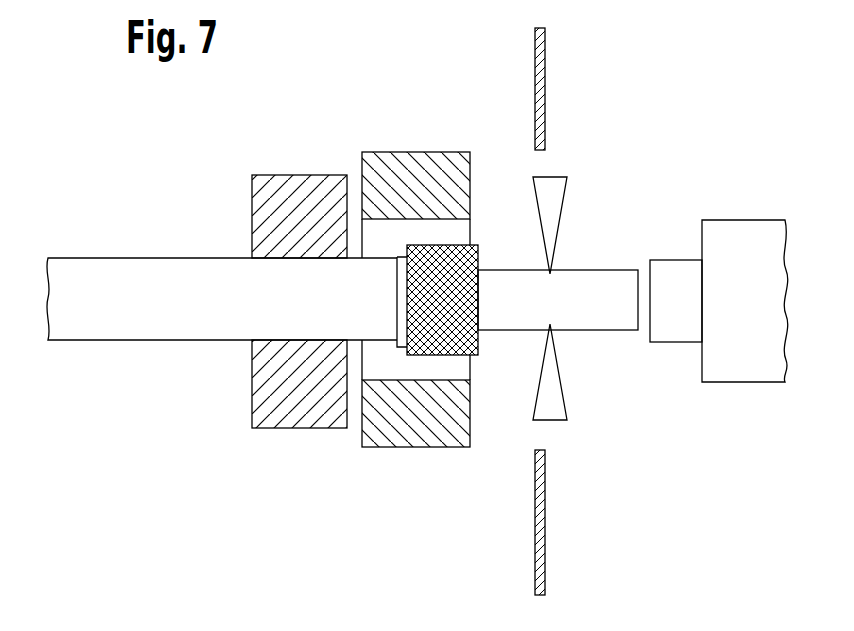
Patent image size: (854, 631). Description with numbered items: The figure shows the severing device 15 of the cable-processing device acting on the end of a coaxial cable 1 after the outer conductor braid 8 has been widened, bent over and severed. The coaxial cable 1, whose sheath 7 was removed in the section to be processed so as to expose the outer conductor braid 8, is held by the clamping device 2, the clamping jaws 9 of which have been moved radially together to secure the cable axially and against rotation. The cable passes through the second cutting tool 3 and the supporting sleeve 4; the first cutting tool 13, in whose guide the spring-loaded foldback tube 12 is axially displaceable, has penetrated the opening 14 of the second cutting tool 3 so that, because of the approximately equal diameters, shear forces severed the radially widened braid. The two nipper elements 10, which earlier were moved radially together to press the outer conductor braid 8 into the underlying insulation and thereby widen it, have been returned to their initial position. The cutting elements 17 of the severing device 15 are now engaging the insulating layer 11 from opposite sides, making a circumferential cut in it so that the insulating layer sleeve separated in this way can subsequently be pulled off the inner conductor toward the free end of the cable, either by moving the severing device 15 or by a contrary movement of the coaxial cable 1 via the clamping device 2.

The coaxial cable 1 is at (86, 238).
The clamping device 2 is at (266, 163).
The second cutting tool 3 is at (436, 183).
The supporting sleeve 4 is at (397, 255).
The sheath 7 is at (105, 327).
The outer conductor braid 8 is at (478, 338).
The clamping jaws 9 is at (270, 222).
The nipper elements 10 is at (540, 72).
The insulating layer 11 is at (598, 283).
The foldback tube 12 is at (668, 278).
The first cutting tool 13 is at (733, 240).
The opening 14 is at (392, 372).
The severing device 15 is at (570, 156).
The cutting elements 17 is at (555, 190).